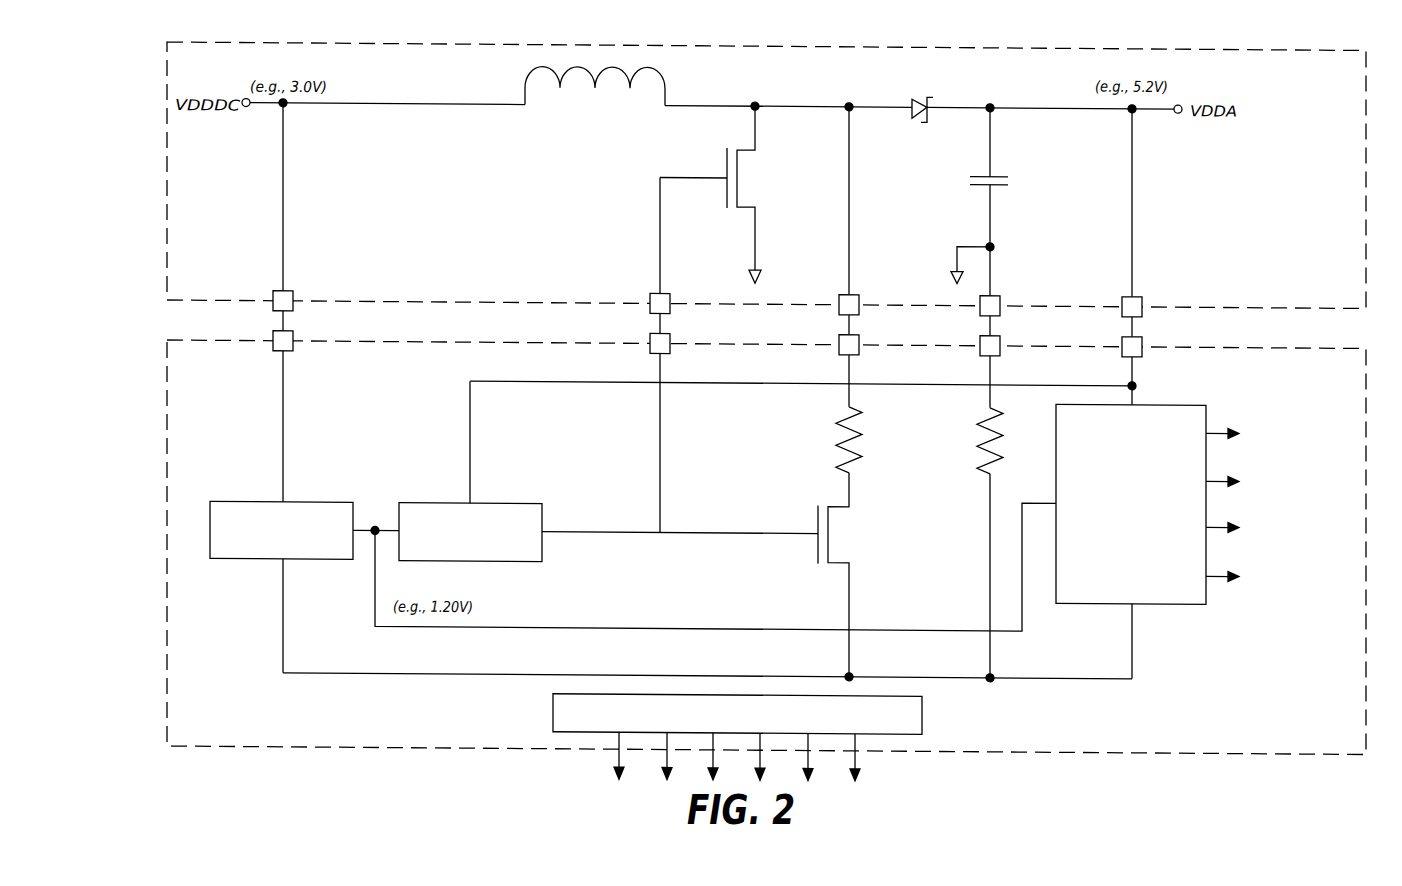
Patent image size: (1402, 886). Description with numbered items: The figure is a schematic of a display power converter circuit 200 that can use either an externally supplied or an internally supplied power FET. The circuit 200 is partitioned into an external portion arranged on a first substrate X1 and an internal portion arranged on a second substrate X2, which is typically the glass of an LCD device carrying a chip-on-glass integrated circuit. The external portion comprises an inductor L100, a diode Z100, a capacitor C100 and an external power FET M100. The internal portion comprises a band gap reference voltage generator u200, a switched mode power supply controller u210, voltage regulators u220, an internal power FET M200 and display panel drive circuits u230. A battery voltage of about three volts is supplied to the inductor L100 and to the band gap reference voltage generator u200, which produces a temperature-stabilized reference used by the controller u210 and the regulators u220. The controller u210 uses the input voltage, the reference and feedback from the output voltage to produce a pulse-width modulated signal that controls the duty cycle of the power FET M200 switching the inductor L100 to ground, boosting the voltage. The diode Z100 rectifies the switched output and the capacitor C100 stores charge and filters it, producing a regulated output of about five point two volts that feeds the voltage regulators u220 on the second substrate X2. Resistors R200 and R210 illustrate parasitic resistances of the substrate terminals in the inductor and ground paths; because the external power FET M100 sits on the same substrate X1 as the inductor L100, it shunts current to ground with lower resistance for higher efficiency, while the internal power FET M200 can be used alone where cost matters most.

The circuit 200 is at (769, 377).
The first substrate X1 is at (234, 300).
The second substrate X2 is at (234, 342).
The inductor L100 is at (596, 106).
The external power FET M100 is at (738, 179).
The diode Z100 is at (918, 93).
The capacitor C100 is at (975, 171).
The band gap reference voltage generator u200 is at (260, 501).
The switched mode power supply controller u210 is at (452, 501).
The voltage regulators u220 is at (1150, 398).
The display panel drive circuits u230 is at (553, 714).
The parasitic resistance R200 is at (835, 432).
The parasitic resistance R210 is at (978, 432).
The internal power FET M200 is at (832, 530).